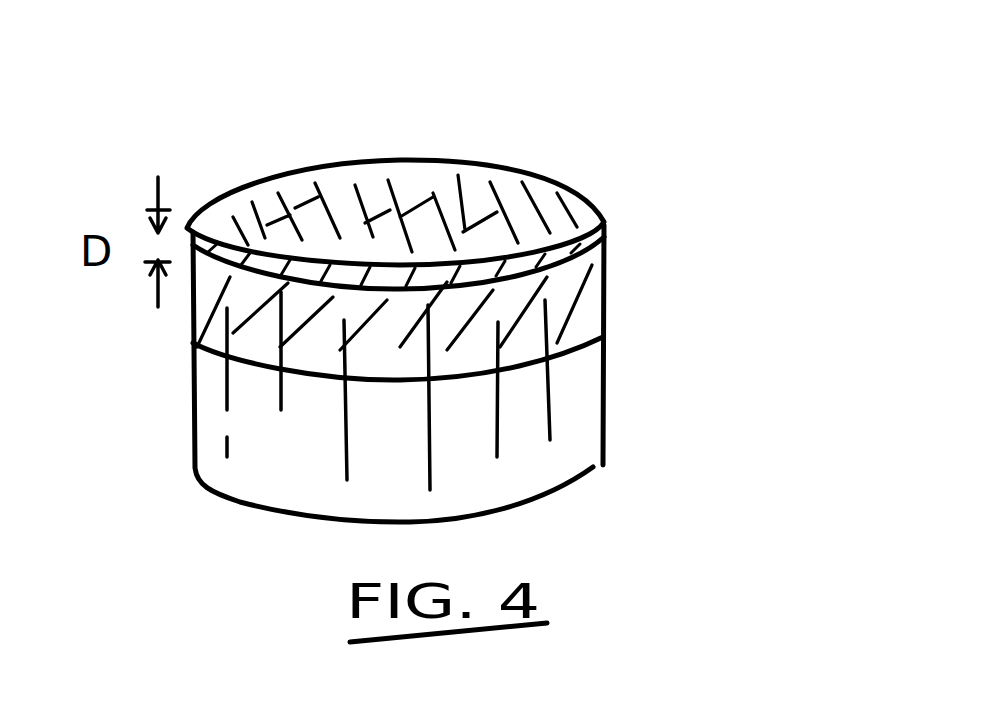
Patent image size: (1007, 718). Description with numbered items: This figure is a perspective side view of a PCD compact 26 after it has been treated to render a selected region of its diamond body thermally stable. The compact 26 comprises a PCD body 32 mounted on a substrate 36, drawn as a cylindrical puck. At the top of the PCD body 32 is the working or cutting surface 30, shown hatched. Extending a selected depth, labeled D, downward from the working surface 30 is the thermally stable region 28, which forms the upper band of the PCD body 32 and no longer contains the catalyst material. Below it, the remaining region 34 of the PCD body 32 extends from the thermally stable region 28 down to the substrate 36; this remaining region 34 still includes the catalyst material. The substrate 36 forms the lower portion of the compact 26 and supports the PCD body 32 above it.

The PCD compact 26 is at (692, 276).
The thermally stable region 28 is at (605, 228).
The working or cutting surface 30 is at (390, 187).
The PCD body 32 is at (604, 284).
The remaining region 34 is at (226, 320).
The substrate 36 is at (590, 418).